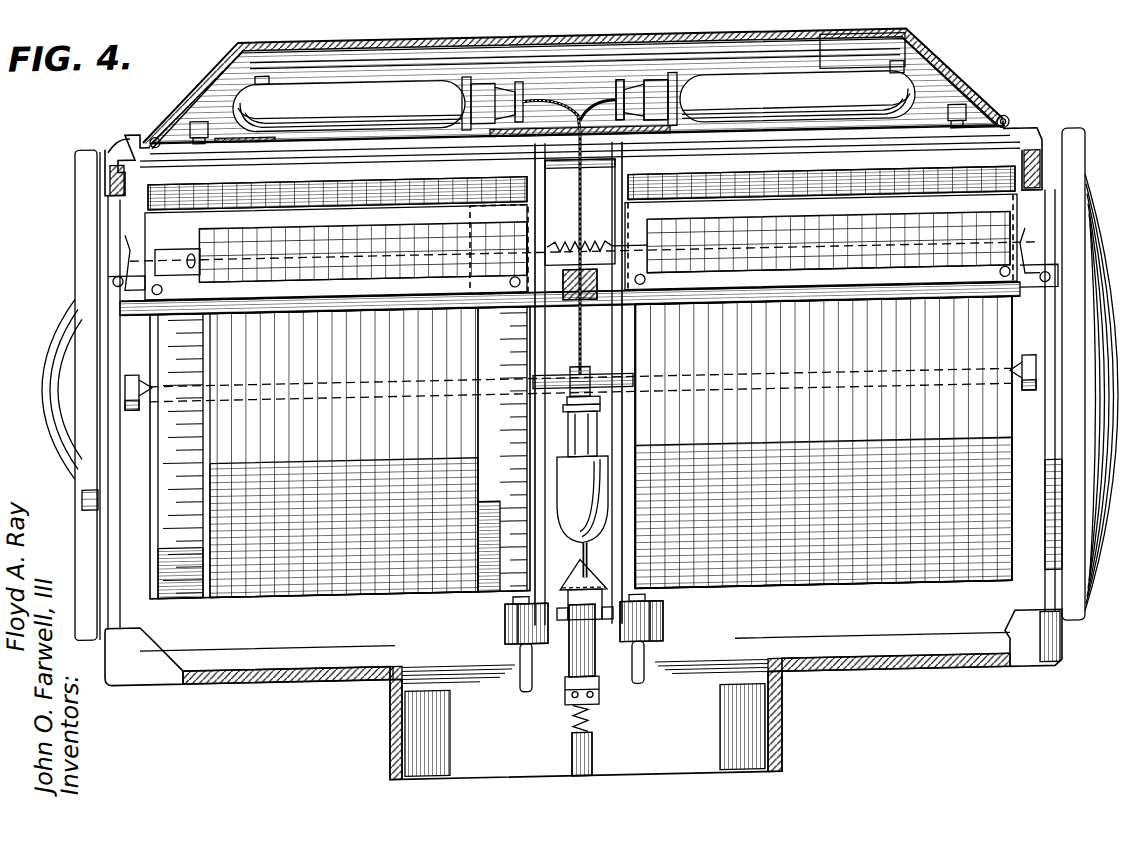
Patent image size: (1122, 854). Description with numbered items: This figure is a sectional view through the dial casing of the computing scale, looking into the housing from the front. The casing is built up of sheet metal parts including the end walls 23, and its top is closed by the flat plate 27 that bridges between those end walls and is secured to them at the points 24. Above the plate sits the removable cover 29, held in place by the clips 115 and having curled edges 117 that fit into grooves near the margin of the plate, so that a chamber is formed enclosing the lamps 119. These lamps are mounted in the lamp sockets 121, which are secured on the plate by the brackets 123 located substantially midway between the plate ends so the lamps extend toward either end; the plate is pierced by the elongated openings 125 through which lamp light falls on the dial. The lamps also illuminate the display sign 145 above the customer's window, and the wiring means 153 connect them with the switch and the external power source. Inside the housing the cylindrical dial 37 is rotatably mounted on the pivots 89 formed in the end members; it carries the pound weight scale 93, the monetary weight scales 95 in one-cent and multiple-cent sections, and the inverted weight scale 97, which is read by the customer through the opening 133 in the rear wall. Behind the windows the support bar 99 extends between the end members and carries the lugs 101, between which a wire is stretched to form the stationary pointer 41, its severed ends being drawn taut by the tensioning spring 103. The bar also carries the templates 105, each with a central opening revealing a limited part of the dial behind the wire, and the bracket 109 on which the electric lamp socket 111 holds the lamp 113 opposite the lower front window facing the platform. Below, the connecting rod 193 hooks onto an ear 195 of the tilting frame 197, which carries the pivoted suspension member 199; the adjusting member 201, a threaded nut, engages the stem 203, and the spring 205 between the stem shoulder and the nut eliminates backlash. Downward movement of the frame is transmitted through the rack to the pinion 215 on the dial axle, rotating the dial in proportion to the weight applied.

The end walls 23 is at (70, 270).
The securing points 24 is at (130, 126).
The flat plate 27 is at (985, 133).
The cover 29 is at (934, 52).
The dial 37 is at (878, 578).
The pointer 41 is at (360, 240).
The pivots 89 is at (135, 403).
The weight indicating scale 93 is at (195, 586).
The weight scales 95 is at (280, 580).
The inverted weight scale 97 is at (500, 588).
The support bar 99 is at (555, 265).
The lugs 101 is at (135, 236).
The tensioning spring 103 is at (600, 252).
The template 105 is at (430, 196).
The bracket 109 is at (590, 327).
The electric lamp socket 111 is at (600, 422).
The lamp 113 is at (578, 548).
The clips 115 is at (200, 114).
The curled edges 117 is at (1010, 128).
The lamps 119 is at (375, 91).
The lamp sockets 121 is at (690, 88).
The brackets 123 is at (630, 90).
The elongated openings 125 is at (330, 140).
The opening 133 is at (500, 206).
The display sign 145 is at (558, 56).
The interconnecting means 153 is at (560, 98).
The connecting rod 193 is at (592, 578).
The ear 195 is at (590, 640).
The tilting frame 197 is at (563, 640).
The pivoted suspension member 199 is at (598, 672).
The adjusting member 201 is at (600, 700).
The stem 203 is at (592, 757).
The spring 205 is at (592, 722).
The pinion 215 is at (610, 366).